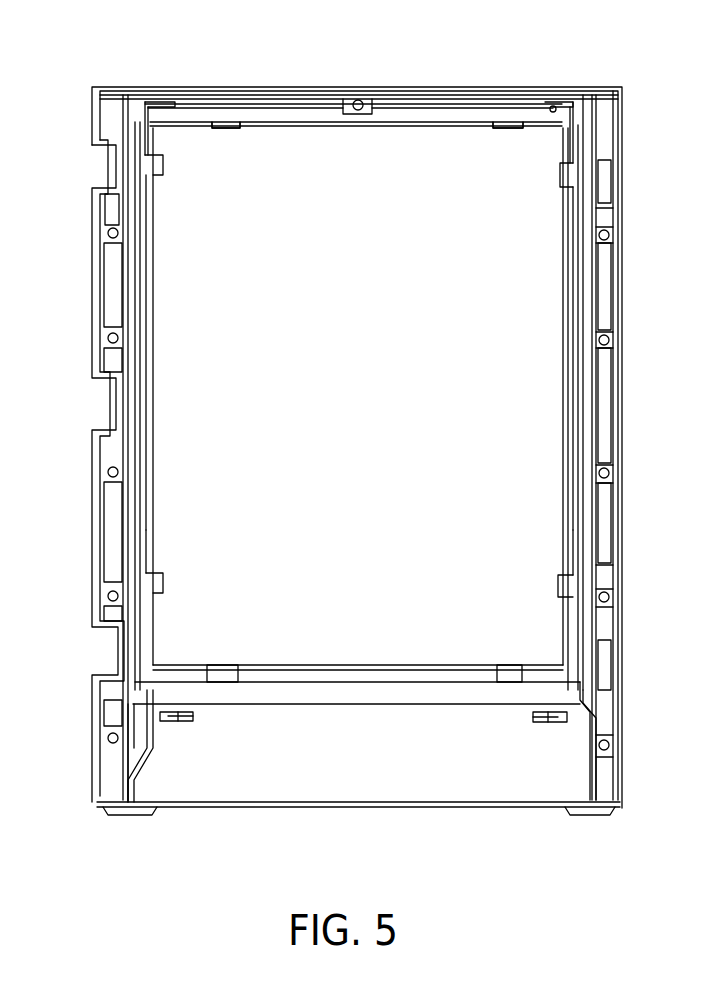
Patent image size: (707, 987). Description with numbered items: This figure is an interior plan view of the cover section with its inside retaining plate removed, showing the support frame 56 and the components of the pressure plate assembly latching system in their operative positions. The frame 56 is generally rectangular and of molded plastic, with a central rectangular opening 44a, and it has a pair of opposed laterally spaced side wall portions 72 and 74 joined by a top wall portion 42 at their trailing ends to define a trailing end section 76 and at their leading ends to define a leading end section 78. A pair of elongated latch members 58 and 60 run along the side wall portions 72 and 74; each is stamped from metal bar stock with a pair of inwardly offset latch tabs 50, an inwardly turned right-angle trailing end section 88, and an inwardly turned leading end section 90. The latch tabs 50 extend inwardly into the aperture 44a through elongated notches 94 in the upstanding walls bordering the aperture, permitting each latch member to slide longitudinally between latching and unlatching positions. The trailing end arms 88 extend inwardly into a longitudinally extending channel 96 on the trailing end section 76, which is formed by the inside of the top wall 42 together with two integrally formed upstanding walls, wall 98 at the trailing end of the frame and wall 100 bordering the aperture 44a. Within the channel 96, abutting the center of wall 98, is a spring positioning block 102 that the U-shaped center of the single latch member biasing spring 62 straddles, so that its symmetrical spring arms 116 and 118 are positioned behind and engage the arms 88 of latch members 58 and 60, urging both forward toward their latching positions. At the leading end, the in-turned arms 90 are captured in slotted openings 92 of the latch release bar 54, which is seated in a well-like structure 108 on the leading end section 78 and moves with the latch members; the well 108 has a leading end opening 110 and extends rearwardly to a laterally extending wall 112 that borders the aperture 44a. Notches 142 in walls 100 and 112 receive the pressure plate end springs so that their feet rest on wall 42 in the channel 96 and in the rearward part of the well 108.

The top wall portion 42 is at (402, 120).
The central rectangular opening 44a is at (455, 175).
The latch tabs 50 is at (559, 181).
The latch release bar 54 is at (212, 790).
The support frame 56 is at (625, 88).
The latch member 58 is at (154, 378).
The latch member 60 is at (571, 422).
The latch member biasing spring 62 is at (337, 109).
The side wall portion 72 is at (92, 452).
The side wall portion 74 is at (624, 291).
The trailing end section 76 is at (273, 77).
The leading end section 78 is at (95, 731).
The trailing end section 88 is at (163, 108).
The leading end section 90 is at (178, 722).
The slotted opening 92 is at (193, 716).
The elongated notches 94 is at (571, 158).
The channel 96 is at (447, 108).
The upstanding wall 98 is at (386, 95).
The upstanding wall 100 is at (346, 127).
The spring positioning block 102 is at (355, 98).
The release bar receiving well 108 is at (285, 701).
The leading end opening 110 is at (128, 808).
The laterally extending wall 112 is at (362, 668).
The spring arm 116 is at (215, 99).
The spring arm 118 is at (507, 107).
The notches 142 is at (222, 128).